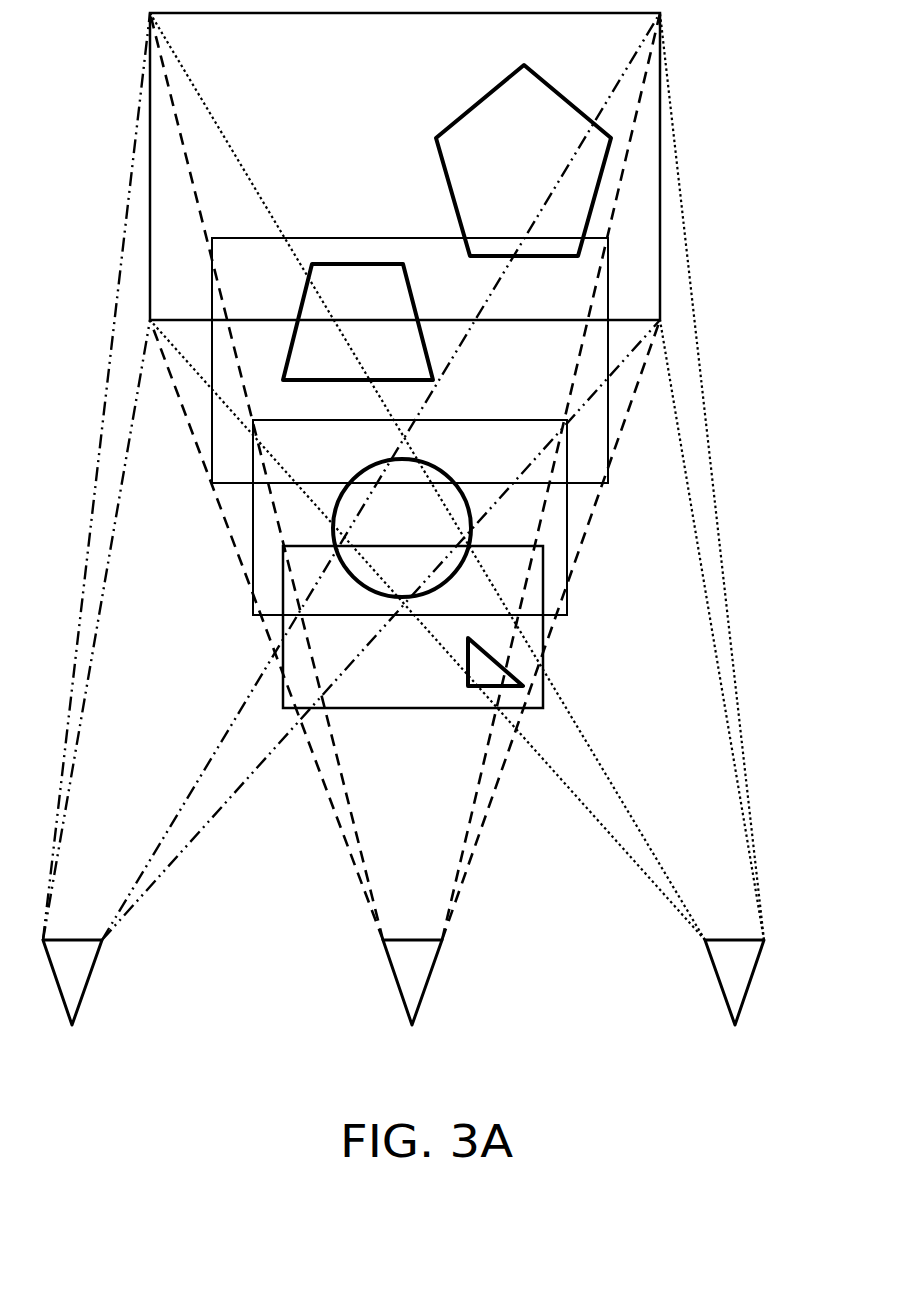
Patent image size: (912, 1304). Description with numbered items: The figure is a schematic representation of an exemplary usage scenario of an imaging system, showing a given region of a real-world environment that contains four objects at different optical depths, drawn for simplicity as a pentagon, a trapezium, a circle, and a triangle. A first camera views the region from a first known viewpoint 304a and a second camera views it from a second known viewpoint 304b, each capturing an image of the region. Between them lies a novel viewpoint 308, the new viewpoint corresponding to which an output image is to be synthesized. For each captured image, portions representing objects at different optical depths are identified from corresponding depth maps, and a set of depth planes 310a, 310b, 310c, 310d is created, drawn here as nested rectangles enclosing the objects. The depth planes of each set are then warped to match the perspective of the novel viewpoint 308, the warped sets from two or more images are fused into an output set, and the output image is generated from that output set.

The first known viewpoint 304a is at (351, 519).
The second known viewpoint 304b is at (457, 519).
The novel viewpoint 308 is at (405, 519).
The depth plane 310a is at (474, 627).
The depth plane 310b is at (471, 517).
The depth plane 310c is at (449, 385).
The depth plane 310d is at (472, 166).